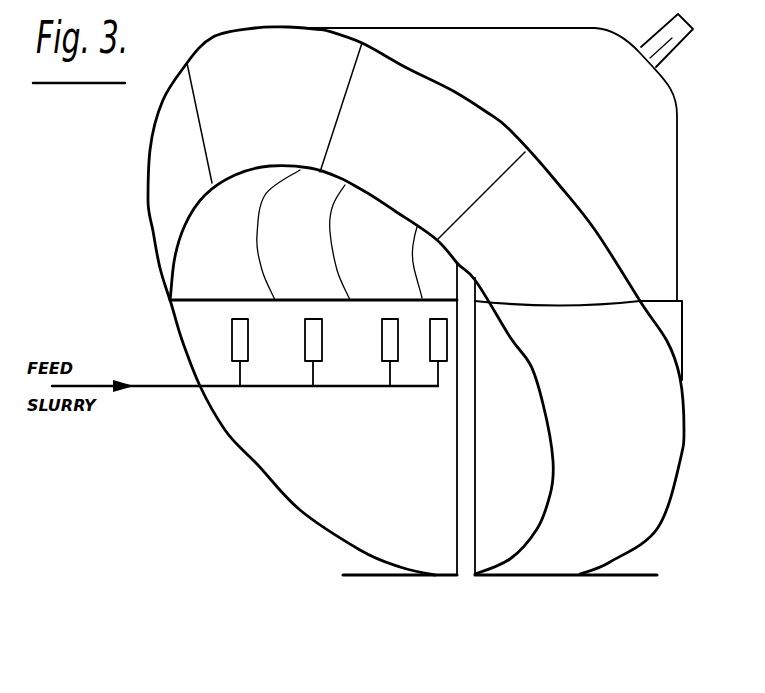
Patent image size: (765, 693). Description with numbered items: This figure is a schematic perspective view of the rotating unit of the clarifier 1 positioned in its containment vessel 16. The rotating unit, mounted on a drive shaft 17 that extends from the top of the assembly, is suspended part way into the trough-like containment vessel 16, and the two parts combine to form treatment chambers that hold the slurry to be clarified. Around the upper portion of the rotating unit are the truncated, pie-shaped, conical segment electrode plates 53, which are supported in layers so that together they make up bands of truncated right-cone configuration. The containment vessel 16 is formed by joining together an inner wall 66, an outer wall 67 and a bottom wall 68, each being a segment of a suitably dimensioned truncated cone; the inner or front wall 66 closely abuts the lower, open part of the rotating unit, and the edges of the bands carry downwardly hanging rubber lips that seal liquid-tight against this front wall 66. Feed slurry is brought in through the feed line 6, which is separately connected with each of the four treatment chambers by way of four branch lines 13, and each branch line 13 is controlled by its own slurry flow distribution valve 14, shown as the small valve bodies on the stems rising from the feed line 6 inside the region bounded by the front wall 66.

The clarifier 1 is at (684, 237).
The feed line 6 is at (148, 387).
The branch lines 13 is at (241, 374).
The slurry flow distribution valve 14 is at (247, 335).
The containment vessel 16 is at (657, 484).
The drive shaft 17 is at (674, 39).
The electrode plates 53 is at (456, 108).
The inner wall 66 is at (367, 443).
The outer wall 67 is at (674, 321).
The bottom wall 68 is at (613, 410).